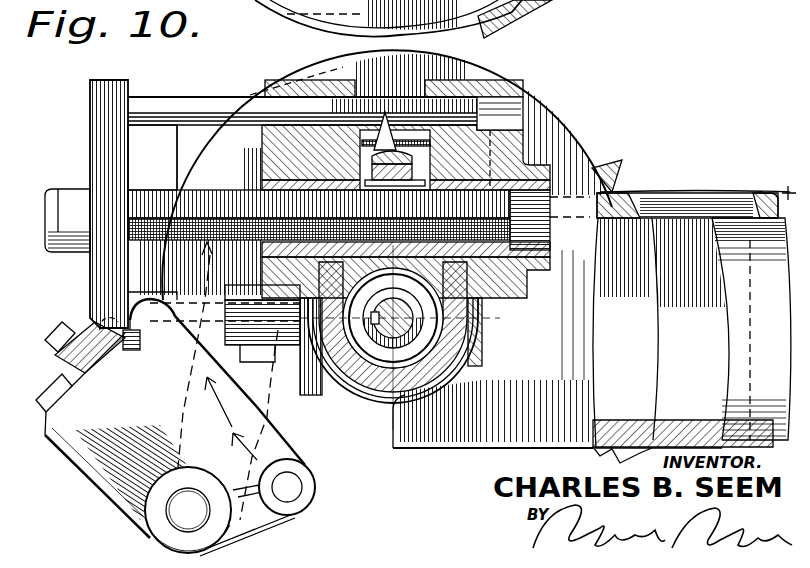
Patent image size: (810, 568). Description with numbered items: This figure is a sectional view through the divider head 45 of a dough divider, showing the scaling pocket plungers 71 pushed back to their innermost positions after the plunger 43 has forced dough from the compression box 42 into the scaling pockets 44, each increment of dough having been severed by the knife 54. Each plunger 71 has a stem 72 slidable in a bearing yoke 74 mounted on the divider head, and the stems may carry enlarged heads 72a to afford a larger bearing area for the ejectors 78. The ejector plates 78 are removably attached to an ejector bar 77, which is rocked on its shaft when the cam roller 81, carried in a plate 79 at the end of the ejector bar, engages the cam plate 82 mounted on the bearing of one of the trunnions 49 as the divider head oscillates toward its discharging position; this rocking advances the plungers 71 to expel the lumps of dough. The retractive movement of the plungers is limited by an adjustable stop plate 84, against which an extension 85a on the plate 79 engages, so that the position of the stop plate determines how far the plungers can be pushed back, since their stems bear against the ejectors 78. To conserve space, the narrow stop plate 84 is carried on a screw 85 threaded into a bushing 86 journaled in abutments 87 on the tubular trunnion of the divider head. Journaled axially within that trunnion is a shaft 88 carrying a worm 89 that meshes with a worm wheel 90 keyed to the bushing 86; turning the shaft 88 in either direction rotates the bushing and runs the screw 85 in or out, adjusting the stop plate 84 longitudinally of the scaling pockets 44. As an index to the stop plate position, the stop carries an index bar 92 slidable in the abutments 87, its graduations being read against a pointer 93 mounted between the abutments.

The compression box 42 is at (685, 192).
The plunger 43 is at (751, 329).
The scaling pockets 44 is at (661, 333).
The divider head 45 is at (608, 188).
The trunnions 49 is at (370, 398).
The knife 54 is at (770, 192).
The plungers 71 is at (488, 370).
The stems 72 is at (200, 352).
The enlarged heads 72a is at (137, 293).
The bearing yoke 74 is at (305, 396).
The ejector bar 77 is at (50, 440).
The ejector plates 78 is at (97, 330).
The plate 79 is at (114, 505).
The cam roller 81 is at (312, 502).
The cam plate 82 is at (196, 140).
The adjustable stop plate 84 is at (93, 147).
The screw 85 is at (150, 300).
The bore 85a is at (154, 192).
The bushing 86 is at (552, 162).
The abutments 87 is at (300, 98).
The shaft 88 is at (445, 335).
The worm 89 is at (437, 322).
The worm wheel 90 is at (362, 150).
The index bar 92 is at (154, 100).
The pointer 93 is at (385, 112).